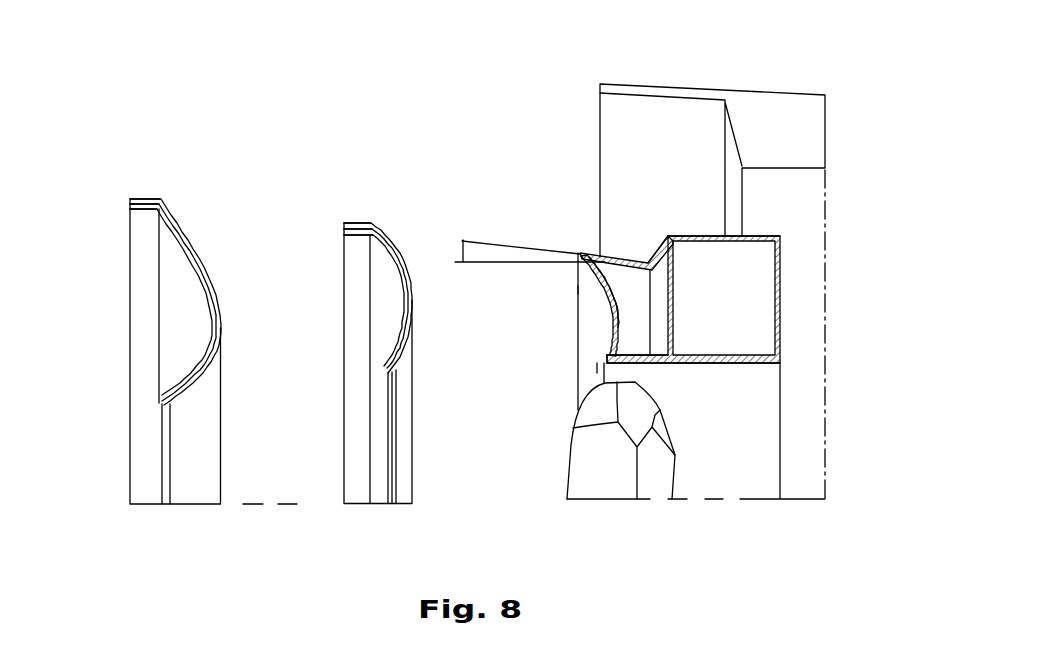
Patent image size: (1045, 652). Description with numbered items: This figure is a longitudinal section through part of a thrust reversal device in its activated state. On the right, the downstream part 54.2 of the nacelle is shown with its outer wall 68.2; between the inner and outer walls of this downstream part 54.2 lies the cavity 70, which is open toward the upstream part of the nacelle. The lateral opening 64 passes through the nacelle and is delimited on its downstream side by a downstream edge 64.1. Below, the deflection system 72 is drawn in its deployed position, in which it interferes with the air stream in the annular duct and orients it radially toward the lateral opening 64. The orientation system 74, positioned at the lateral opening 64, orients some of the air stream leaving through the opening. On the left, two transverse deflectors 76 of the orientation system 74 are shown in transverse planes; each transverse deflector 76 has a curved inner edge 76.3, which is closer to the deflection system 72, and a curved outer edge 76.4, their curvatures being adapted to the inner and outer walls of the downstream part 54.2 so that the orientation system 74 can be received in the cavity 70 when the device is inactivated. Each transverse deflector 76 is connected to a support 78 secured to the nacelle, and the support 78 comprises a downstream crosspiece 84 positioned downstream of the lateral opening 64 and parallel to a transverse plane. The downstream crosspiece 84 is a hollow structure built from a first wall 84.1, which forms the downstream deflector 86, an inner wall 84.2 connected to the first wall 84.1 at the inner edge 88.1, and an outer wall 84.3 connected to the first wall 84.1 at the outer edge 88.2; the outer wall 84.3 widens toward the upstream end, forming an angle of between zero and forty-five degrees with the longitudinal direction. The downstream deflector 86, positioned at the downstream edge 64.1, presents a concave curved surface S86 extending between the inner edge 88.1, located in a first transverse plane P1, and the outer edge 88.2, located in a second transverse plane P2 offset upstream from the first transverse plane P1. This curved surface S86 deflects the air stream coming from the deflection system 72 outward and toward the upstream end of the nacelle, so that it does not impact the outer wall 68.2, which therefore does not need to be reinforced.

The downstream part 54.2 is at (768, 92).
The lateral opening 64 is at (227, 294).
The downstream edge 64.1 is at (580, 256).
The outer wall 68.2 is at (690, 93).
The cavity 70 is at (844, 334).
The deflection system 72 is at (571, 490).
The orientation system 74 is at (193, 182).
The transverse deflector 76 is at (343, 408).
The inner edge 76.3 is at (162, 403).
The outer edge 76.4 is at (152, 198).
The support 78 is at (685, 233).
The downstream crosspiece 84 is at (753, 260).
The first wall 84.1 is at (617, 327).
The inner wall 84.2 is at (730, 362).
The outer wall 84.3 is at (620, 256).
The downstream deflector 86 is at (607, 315).
The curved surface S86 is at (606, 291).
The inner edge 88.1 is at (607, 357).
The outer edge 88.2 is at (575, 258).
The first transverse plane P1 is at (597, 373).
The second transverse plane P2 is at (578, 290).